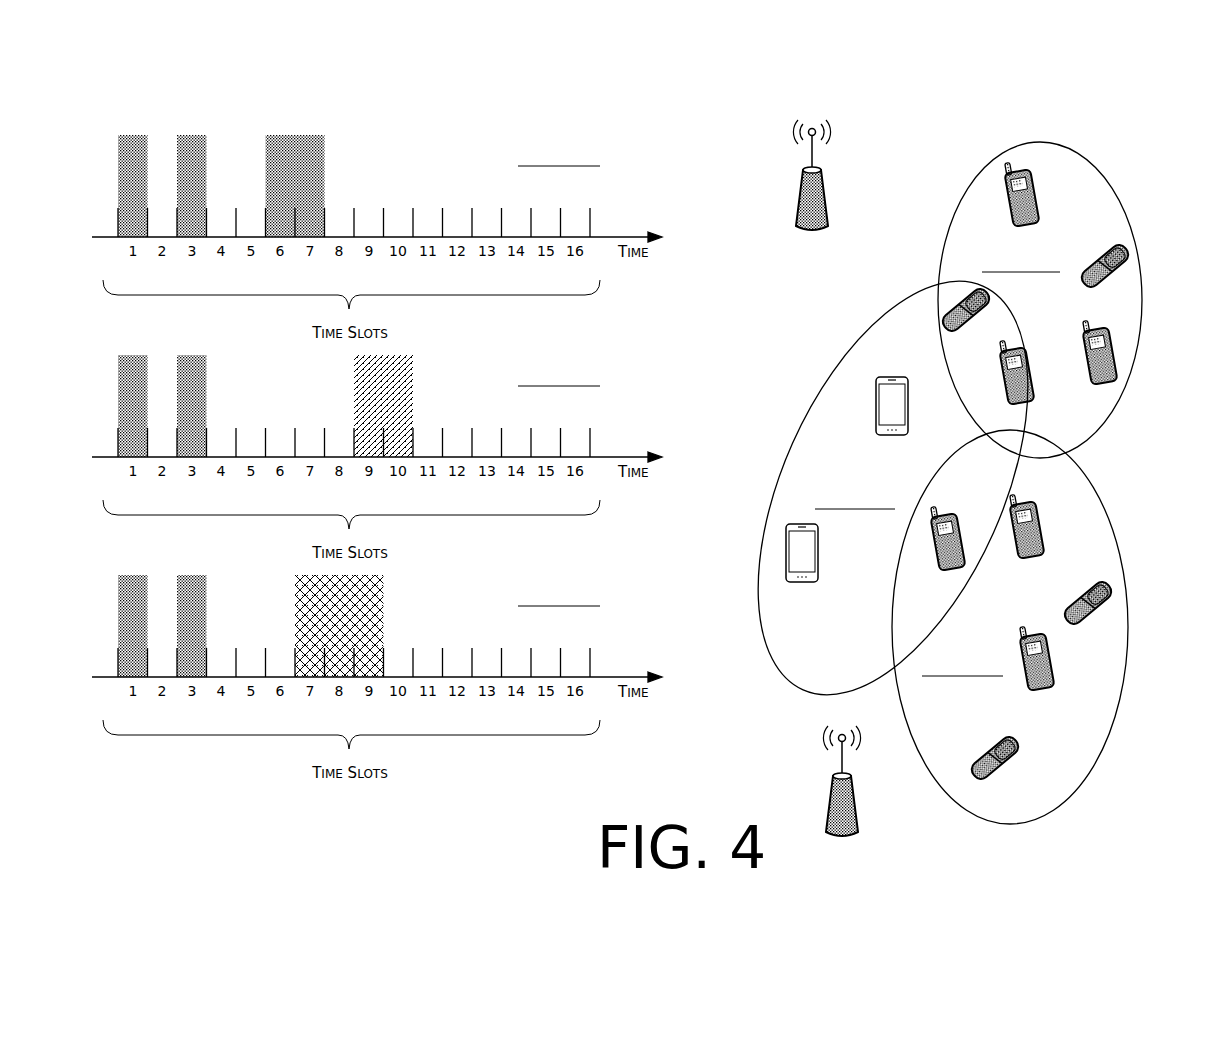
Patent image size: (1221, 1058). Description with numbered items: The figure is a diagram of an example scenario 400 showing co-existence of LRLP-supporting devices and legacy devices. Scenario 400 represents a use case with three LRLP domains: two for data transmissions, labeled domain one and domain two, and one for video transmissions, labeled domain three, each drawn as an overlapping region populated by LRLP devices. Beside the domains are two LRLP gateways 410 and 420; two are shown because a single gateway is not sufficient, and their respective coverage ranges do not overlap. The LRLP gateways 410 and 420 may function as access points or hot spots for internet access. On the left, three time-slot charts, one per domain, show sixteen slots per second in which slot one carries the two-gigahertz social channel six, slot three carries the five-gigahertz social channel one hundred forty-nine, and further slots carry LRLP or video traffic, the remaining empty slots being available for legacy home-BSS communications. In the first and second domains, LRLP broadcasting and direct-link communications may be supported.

The scenario 400 is at (672, 110).
The LRLP gateway 410 is at (811, 188).
The LRLP gateway 420 is at (841, 796).